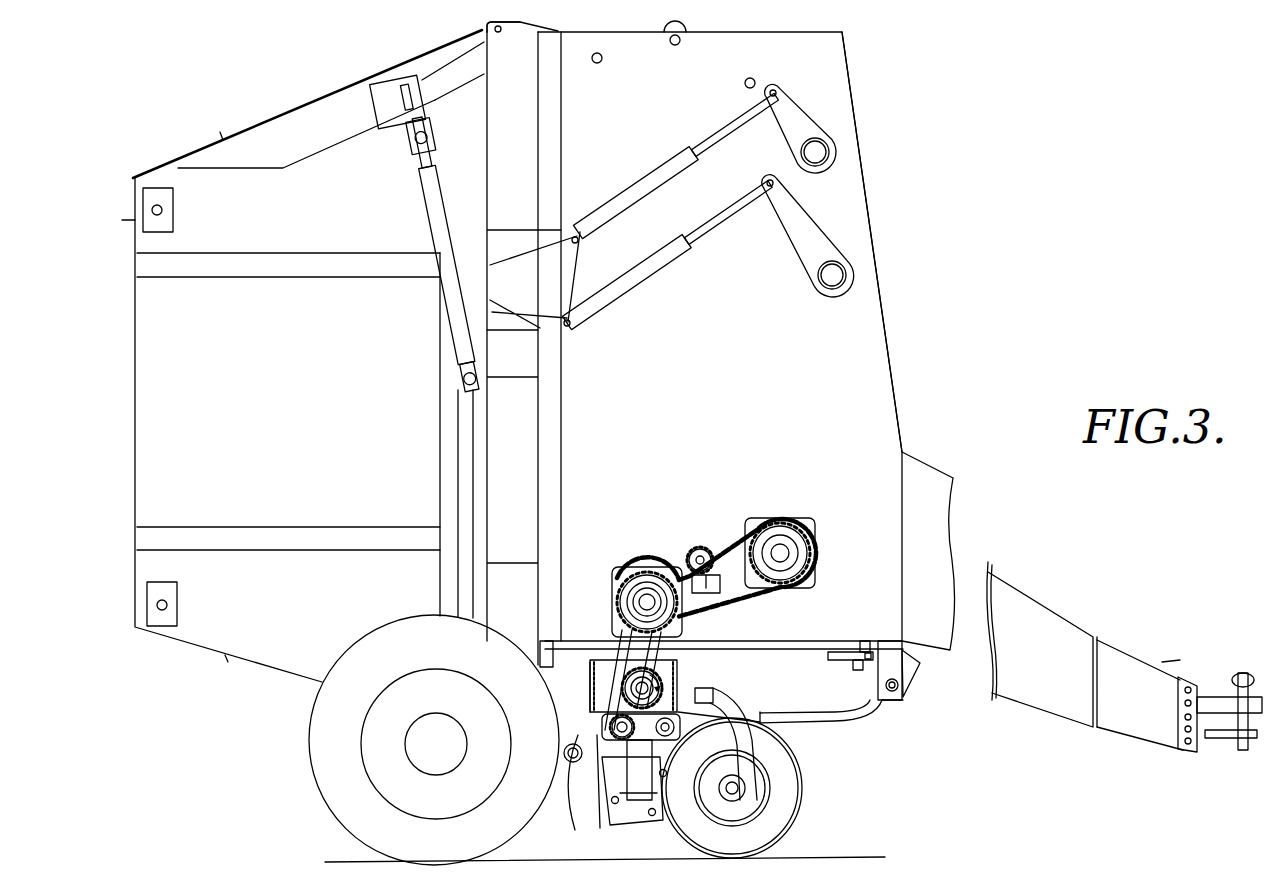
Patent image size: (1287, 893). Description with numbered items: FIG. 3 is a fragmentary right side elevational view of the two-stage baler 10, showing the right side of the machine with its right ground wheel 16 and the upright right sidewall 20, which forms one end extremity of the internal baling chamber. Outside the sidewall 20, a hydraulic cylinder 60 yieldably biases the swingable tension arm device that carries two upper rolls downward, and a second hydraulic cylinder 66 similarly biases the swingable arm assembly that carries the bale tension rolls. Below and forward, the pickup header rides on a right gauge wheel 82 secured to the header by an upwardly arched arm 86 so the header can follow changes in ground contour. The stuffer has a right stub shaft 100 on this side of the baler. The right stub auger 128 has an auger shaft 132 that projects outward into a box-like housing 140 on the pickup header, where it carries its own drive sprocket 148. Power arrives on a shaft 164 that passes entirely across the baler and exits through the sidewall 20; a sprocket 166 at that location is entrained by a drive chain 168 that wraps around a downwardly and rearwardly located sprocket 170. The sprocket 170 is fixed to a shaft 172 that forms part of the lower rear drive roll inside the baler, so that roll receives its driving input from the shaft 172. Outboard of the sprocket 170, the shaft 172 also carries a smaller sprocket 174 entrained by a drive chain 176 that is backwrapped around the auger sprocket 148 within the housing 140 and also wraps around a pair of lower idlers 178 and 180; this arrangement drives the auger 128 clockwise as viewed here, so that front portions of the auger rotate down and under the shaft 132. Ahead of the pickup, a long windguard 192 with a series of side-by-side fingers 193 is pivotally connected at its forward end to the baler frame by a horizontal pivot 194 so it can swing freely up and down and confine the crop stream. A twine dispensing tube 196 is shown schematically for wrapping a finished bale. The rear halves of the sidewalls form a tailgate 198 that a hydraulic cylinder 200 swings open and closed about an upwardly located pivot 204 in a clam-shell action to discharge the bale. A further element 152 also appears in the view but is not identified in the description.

The two-stage baler 10 is at (880, 146).
The right ground wheel 16 is at (323, 757).
The right sidewall 20 is at (866, 350).
The hydraulic cylinder 60 is at (655, 170).
The hydraulic cylinder 66 is at (648, 276).
The right gauge wheel 82 is at (777, 828).
The upwardly arched arm 86 is at (753, 757).
The stub shaft 100 is at (572, 795).
The stub auger 128 is at (690, 654).
The auger shaft 132 is at (690, 690).
The box like housing 140 is at (588, 690).
The drive sprocket 148 is at (665, 674).
The hitch tongue 152 is at (1027, 607).
The shaft 164 is at (781, 553).
The sprocket 166 is at (800, 565).
The drive chain 168 is at (733, 547).
The sprocket 170 is at (655, 567).
The shaft 172 is at (637, 600).
The smaller sprocket 174 is at (612, 612).
The drive chain 176 is at (605, 660).
The lower idler 178 is at (610, 726).
The lower idler 180 is at (714, 700).
The windguard 192 is at (875, 720).
The fingers 193 is at (807, 722).
The horizontal pivot 194 is at (902, 692).
The twine dispensing tube 196 is at (843, 655).
The tailgate 198 is at (198, 145).
The hydraulic cylinder 200 is at (453, 305).
The pivot 204 is at (500, 33).